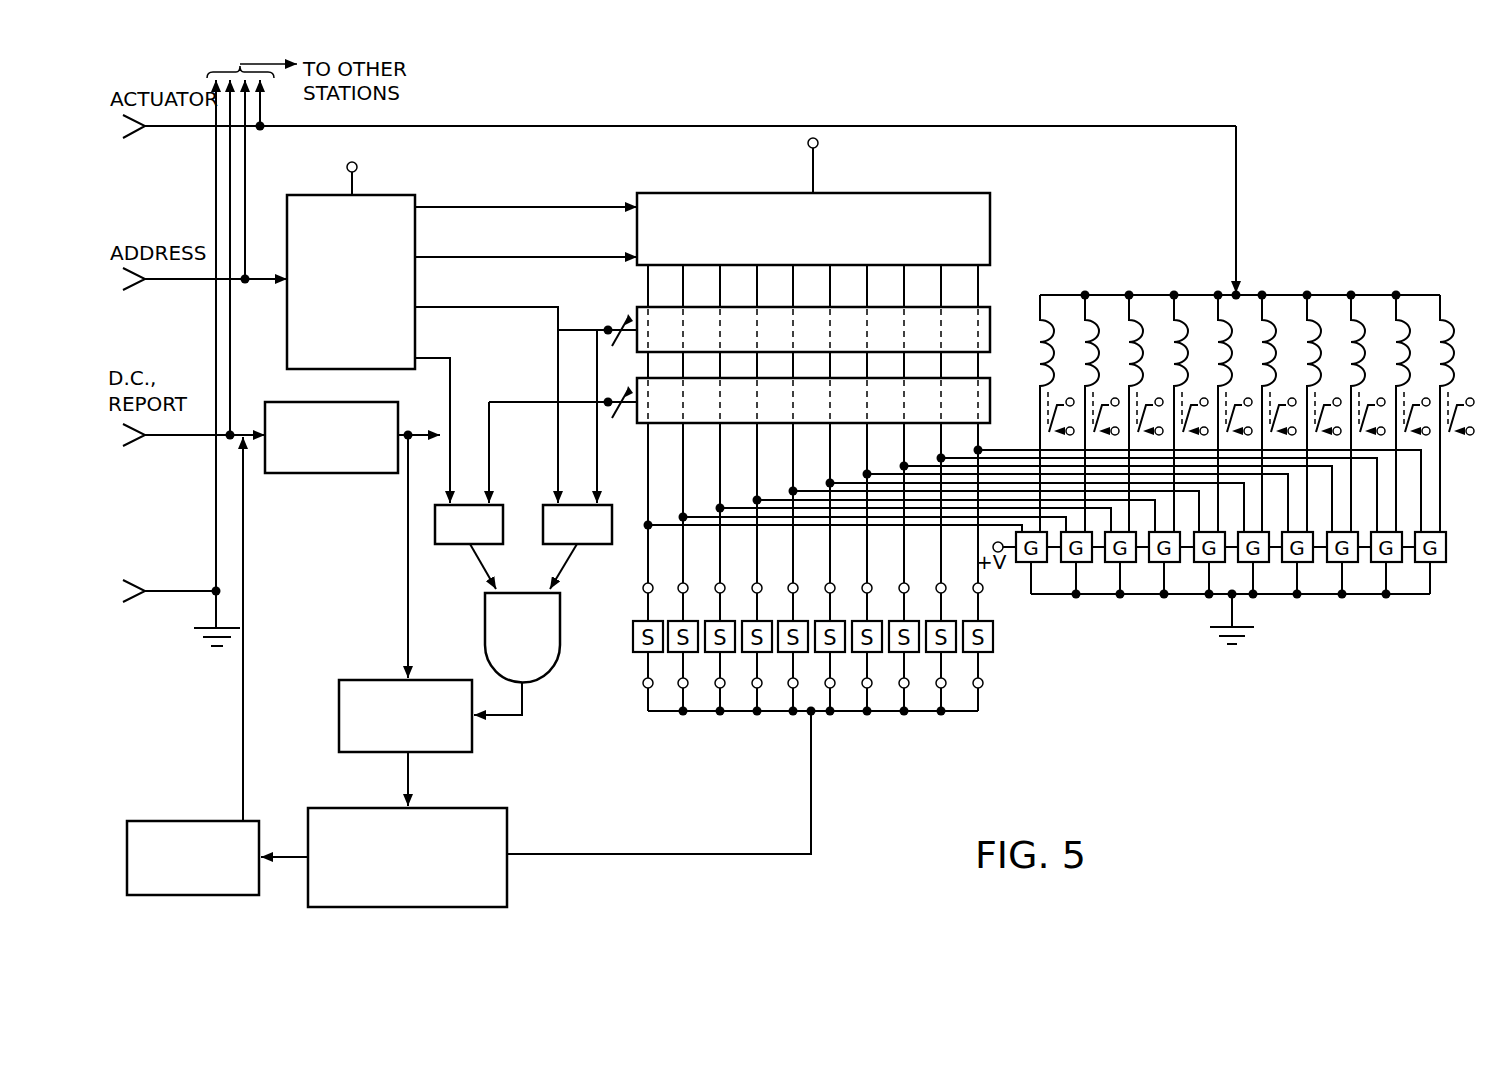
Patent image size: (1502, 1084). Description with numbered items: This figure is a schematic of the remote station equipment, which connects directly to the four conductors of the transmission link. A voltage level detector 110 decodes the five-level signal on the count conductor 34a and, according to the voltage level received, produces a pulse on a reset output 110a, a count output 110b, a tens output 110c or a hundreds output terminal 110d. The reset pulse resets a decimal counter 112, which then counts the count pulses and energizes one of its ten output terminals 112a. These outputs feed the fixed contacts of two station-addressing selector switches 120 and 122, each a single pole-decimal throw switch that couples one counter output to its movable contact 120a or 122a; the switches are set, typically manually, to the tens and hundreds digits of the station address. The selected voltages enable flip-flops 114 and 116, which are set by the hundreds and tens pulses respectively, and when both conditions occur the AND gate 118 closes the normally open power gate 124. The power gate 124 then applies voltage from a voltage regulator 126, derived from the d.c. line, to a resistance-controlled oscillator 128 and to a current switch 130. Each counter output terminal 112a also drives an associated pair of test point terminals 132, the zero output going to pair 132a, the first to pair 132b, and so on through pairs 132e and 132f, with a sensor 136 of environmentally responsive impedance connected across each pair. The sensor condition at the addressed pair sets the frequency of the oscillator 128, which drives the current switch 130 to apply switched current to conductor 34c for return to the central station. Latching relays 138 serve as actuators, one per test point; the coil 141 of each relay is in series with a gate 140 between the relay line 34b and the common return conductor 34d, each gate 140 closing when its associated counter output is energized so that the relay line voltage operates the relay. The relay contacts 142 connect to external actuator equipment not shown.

The count conductor 34a is at (202, 279).
The relay line 34b is at (202, 126).
The conductor 34c is at (202, 435).
The transmission link conductor 34d is at (184, 591).
The voltage level detector 110 is at (320, 195).
The reset output 110a is at (563, 207).
The count output 110b is at (580, 257).
The tens output 110c is at (500, 307).
The hundreds output terminal 110d is at (450, 400).
The counter 112 is at (898, 193).
The output terminals 112a is at (986, 277).
The flip-flop 114 is at (506, 515).
The flip-flop 116 is at (614, 515).
The AND gate 118 is at (536, 706).
The station-addressing selector switch 120 is at (1032, 306).
The movable contact 120a is at (636, 310).
The station-addressing selector switch 122 is at (1032, 368).
The movable contact 122a is at (648, 378).
The power gate 124 is at (339, 706).
The voltage regulator 126 is at (326, 473).
The resistance-controlled oscillator 128 is at (507, 841).
The current switch 130 is at (195, 821).
The test point terminals 132 is at (792, 716).
The test point terminal pair 132a is at (641, 669).
The test point terminal pair 132b is at (677, 669).
The test point terminal pair 132e is at (786, 669).
The test point terminal pair 132f is at (820, 669).
The sensor 136 is at (700, 620).
The latching relays 138 is at (1406, 312).
The gate 140 is at (1450, 549).
The coil 141 is at (1465, 334).
The relay contacts 142 is at (1476, 413).